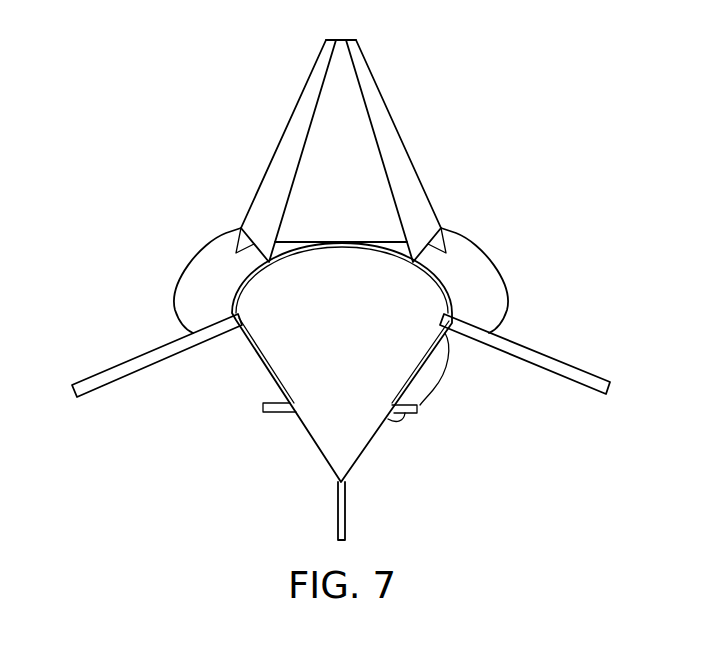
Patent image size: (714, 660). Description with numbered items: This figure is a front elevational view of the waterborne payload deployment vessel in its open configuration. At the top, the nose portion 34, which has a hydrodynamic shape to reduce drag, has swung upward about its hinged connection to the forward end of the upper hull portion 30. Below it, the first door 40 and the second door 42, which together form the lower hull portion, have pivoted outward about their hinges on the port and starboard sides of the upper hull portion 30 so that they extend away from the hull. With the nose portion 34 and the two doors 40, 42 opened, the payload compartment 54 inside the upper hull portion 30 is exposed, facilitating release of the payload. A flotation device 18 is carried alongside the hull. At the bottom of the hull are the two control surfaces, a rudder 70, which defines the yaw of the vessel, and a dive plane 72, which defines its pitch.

The flotation device 18 is at (482, 253).
The upper hull portion 30 is at (266, 367).
The nose portion 34 is at (405, 144).
The first door 40 is at (555, 360).
The second door 42 is at (128, 361).
The payload compartment 54 is at (325, 425).
The rudder 70 is at (346, 513).
The dive plane 72 is at (262, 408).